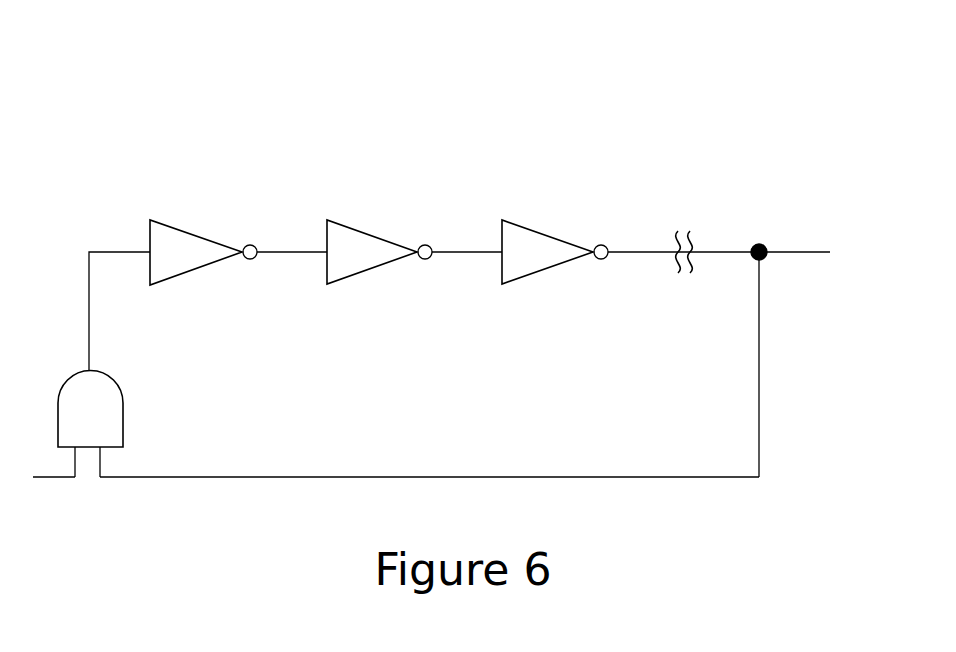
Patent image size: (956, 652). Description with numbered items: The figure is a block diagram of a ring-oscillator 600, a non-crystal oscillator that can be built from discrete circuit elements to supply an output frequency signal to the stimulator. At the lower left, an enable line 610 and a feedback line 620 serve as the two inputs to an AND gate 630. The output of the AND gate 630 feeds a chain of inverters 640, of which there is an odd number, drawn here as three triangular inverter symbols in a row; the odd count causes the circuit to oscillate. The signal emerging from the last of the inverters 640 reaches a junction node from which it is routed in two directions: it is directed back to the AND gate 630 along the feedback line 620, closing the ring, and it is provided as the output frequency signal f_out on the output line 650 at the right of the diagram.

The ring-oscillator 600 is at (548, 128).
The enable line 610 is at (48, 477).
The feedback line 620 is at (175, 477).
The AND gate 630 is at (120, 388).
The inverters 640 is at (200, 233).
The output line 650 is at (800, 252).